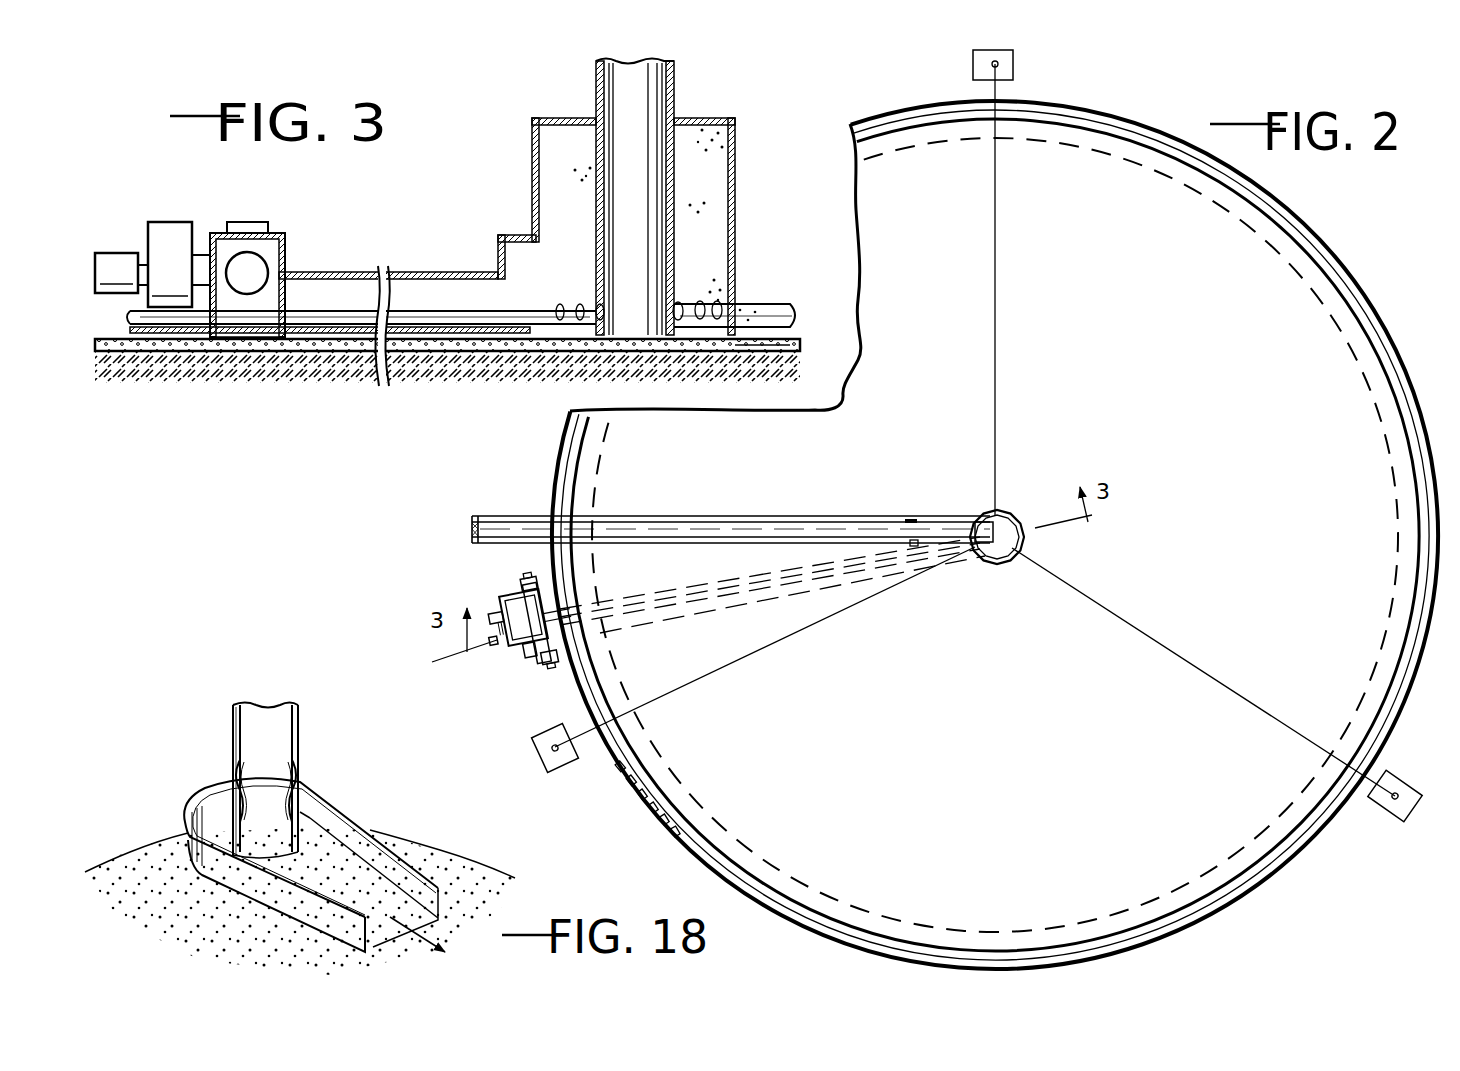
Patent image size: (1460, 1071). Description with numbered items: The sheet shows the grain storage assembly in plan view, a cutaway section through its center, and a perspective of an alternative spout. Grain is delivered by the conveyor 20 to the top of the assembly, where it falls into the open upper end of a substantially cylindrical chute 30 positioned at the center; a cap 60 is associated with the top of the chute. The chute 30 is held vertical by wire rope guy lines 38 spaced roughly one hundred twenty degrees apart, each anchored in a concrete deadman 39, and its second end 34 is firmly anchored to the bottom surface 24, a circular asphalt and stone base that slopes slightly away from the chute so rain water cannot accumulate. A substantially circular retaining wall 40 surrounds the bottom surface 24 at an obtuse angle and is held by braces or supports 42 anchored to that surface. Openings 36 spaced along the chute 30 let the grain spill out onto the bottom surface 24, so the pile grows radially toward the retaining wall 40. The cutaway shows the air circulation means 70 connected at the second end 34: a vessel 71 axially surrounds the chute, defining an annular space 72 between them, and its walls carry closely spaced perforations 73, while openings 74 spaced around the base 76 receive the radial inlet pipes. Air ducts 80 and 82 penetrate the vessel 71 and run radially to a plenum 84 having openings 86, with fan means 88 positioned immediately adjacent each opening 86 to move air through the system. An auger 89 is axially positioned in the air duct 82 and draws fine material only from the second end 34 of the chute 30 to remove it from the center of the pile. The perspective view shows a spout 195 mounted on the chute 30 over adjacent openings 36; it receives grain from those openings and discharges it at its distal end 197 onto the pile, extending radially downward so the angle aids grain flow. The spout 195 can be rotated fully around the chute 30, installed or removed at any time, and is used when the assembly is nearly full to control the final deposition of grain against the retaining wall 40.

In FIG. 2, the conveyor 20 is at (650, 515).
In FIG. 3, the bottom surface 24 is at (487, 357).
In FIG. 2, the bottom surface 24 is at (1386, 325).
In FIG. 3, the chute 30 is at (676, 72).
In FIG. 18, the chute 30 is at (300, 728).
In FIG. 3, the second end of the chute 34 is at (597, 247).
In FIG. 18, the openings 36 is at (300, 770).
In FIG. 2, the guy lines 38 is at (998, 322).
In FIG. 2, the concrete deadman 39 is at (1014, 64).
In FIG. 2, the retaining wall 40 is at (1330, 248).
In FIG. 2, the supports 42 is at (668, 833).
In FIG. 2, the cap 60 is at (1003, 512).
In FIG. 3, the air circulation means 70 is at (586, 207).
In FIG. 3, the vessel 71 is at (532, 145).
In FIG. 3, the annular space 72 is at (557, 160).
In FIG. 3, the perforations 73 is at (735, 135).
In FIG. 3, the openings 74 is at (573, 305).
In FIG. 3, the base of the vessel 76 is at (757, 352).
In FIG. 3, the air duct 80 is at (440, 272).
In FIG. 2, the air duct 80 is at (630, 612).
In FIG. 2, the air duct 82 is at (700, 594).
In FIG. 3, the plenum 84 is at (289, 252).
In FIG. 2, the plenum 84 is at (536, 635).
In FIG. 3, the openings 86 is at (268, 283).
In FIG. 3, the fan means 88 is at (170, 221).
In FIG. 2, the fan means 88 is at (505, 600).
In FIG. 3, the auger 89 is at (130, 316).
In FIG. 2, the auger 89 is at (505, 648).
In FIG. 18, the spout 195 is at (212, 790).
In FIG. 18, the distal end of the spout 197 is at (435, 938).